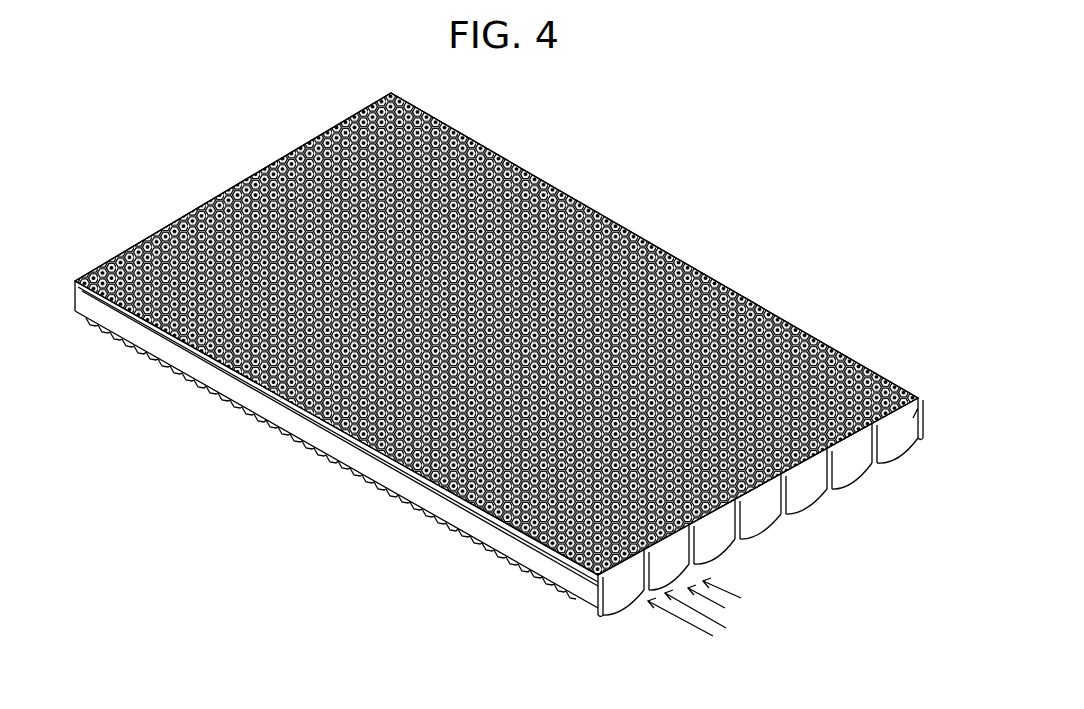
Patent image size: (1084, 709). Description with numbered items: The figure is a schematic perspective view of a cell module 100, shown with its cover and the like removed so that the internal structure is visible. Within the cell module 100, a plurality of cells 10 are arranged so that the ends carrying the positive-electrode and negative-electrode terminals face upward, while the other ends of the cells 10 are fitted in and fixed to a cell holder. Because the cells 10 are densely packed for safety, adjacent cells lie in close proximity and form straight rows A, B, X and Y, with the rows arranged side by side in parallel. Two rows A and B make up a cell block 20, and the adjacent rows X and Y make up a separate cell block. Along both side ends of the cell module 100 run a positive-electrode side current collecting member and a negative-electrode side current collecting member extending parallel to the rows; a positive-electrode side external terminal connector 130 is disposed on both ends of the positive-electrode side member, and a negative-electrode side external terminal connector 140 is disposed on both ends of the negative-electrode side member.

The cell module 100 is at (512, 392).
The cell 10 is at (817, 474).
The positive-electrode side external terminal connector 130 is at (603, 597).
The negative-electrode side external terminal connector 140 is at (899, 412).
The cell block 20 is at (736, 627).